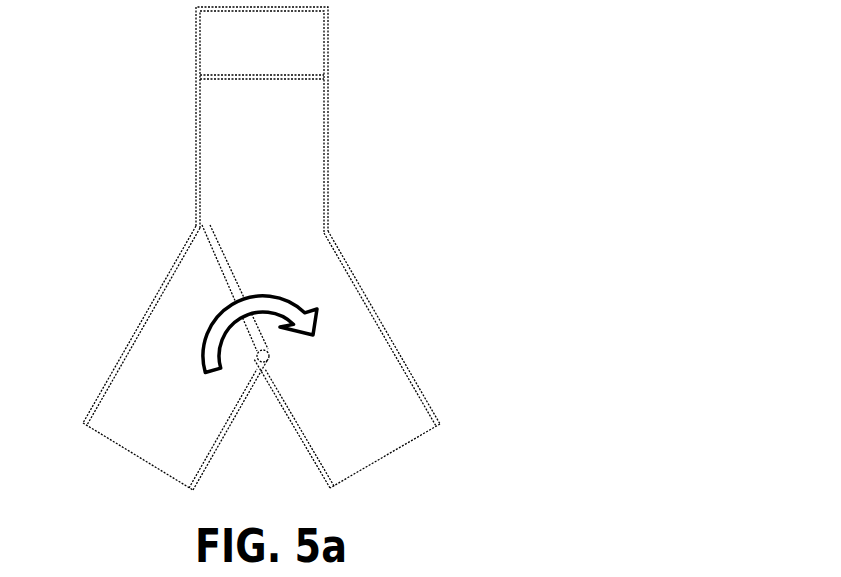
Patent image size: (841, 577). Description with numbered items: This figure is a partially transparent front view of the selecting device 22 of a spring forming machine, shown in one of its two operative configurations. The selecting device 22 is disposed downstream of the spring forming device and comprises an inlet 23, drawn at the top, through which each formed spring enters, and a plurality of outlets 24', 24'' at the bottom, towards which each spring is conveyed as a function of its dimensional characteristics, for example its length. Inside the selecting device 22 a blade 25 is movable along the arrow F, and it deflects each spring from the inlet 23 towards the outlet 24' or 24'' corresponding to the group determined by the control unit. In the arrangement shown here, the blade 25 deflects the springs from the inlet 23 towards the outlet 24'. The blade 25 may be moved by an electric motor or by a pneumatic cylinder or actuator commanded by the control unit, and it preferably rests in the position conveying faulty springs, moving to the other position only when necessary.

The selecting device 22 is at (398, 93).
The inlet 23 is at (226, 46).
The outlet 24' is at (150, 361).
The outlet 24'' is at (372, 364).
The blade 25 is at (233, 279).